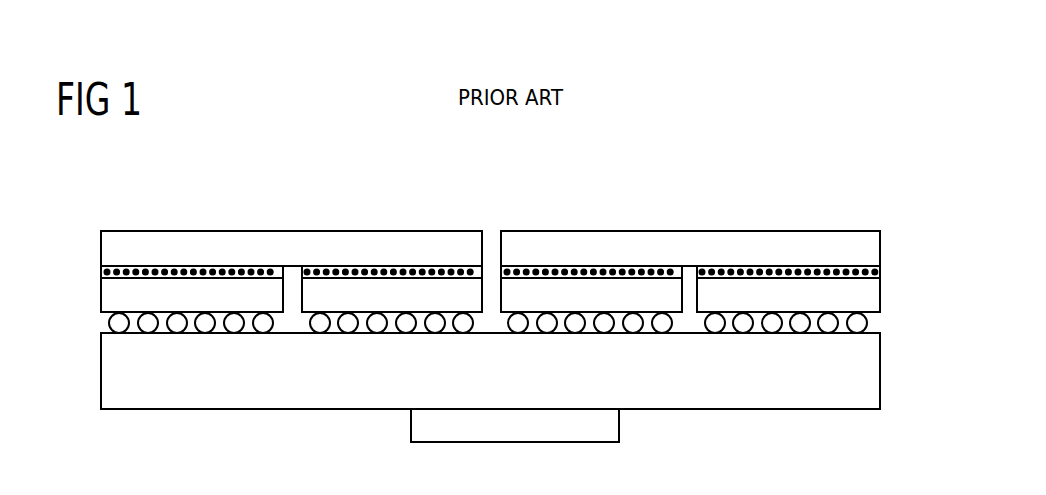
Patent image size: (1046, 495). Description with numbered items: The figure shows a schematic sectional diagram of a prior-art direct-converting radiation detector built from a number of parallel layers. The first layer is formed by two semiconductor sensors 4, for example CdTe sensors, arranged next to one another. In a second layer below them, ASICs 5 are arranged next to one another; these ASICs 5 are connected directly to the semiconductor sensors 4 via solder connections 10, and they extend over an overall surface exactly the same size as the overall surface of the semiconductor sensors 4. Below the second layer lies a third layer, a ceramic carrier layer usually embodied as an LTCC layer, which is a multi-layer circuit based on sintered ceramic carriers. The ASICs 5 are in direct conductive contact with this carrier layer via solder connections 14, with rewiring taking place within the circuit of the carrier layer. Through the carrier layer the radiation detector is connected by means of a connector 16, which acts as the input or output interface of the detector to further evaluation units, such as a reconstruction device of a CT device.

The semiconductor sensor 4 is at (318, 246).
The ASIC 5 is at (220, 297).
The solder connection 10 is at (874, 265).
The solder connection 14 is at (856, 335).
The connector 16 is at (617, 422).